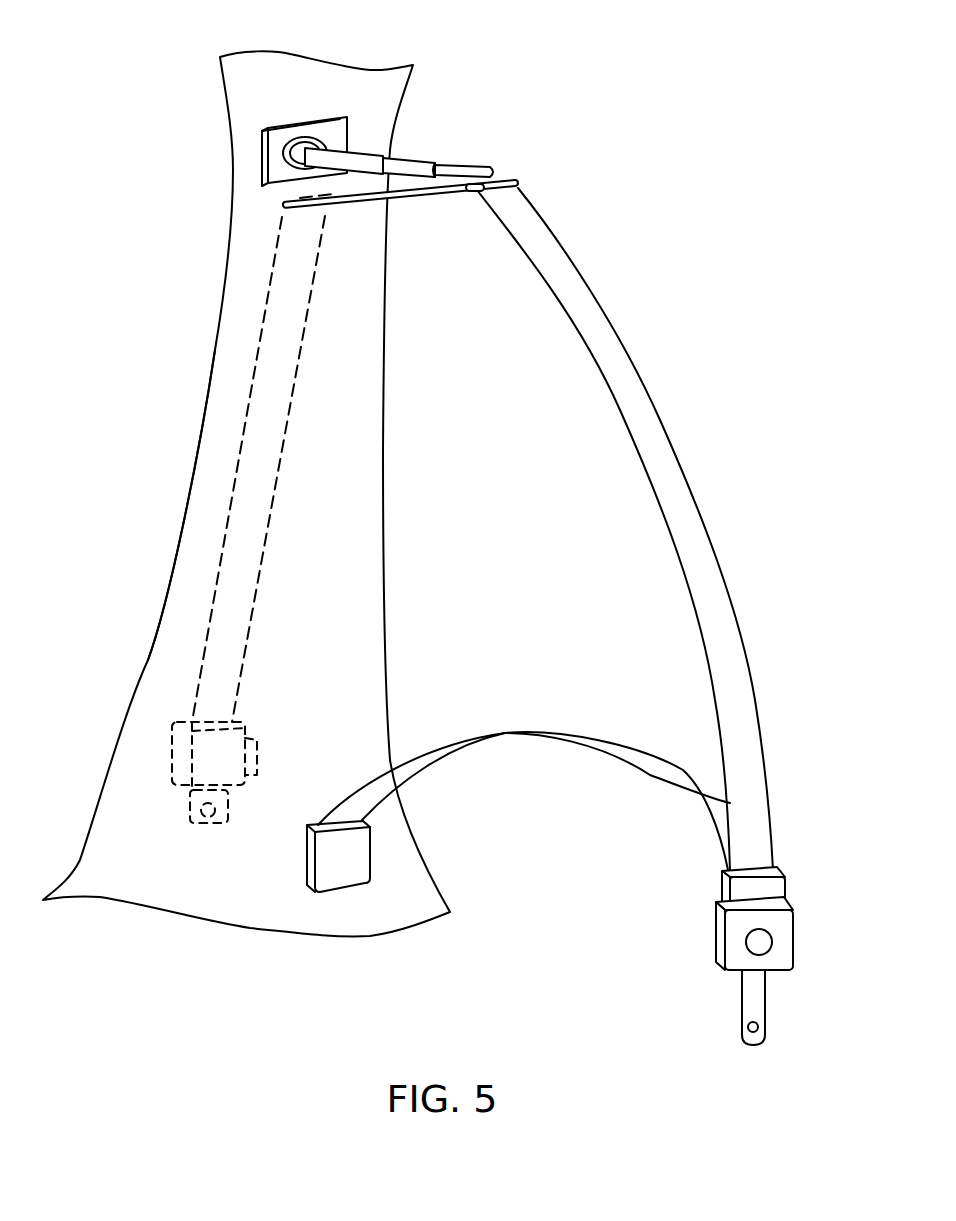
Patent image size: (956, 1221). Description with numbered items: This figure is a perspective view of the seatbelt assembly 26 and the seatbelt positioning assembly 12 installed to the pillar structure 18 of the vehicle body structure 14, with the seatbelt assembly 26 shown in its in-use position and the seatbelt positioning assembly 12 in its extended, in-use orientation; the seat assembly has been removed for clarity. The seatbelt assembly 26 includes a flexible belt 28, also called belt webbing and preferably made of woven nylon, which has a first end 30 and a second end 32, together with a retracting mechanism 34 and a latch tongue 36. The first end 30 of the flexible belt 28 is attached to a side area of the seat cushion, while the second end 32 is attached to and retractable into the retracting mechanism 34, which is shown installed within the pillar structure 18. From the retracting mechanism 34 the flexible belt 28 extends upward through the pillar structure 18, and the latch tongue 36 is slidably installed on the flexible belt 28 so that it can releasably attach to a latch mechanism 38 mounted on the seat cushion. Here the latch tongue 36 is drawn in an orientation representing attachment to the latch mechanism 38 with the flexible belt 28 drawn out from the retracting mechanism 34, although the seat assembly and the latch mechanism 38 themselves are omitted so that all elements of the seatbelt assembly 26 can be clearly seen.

The seatbelt positioning assembly 12 is at (418, 150).
The vehicle body structure 14 is at (366, 66).
The pillar structure 18 is at (204, 396).
The seatbelt assembly 26 is at (252, 157).
The flexible belt 28 is at (702, 575).
The first end 30 is at (345, 858).
The second end 32 is at (212, 698).
The retracting mechanism 34 is at (207, 767).
The latch tongue 36 is at (763, 888).
The latch mechanism 38 is at (793, 936).